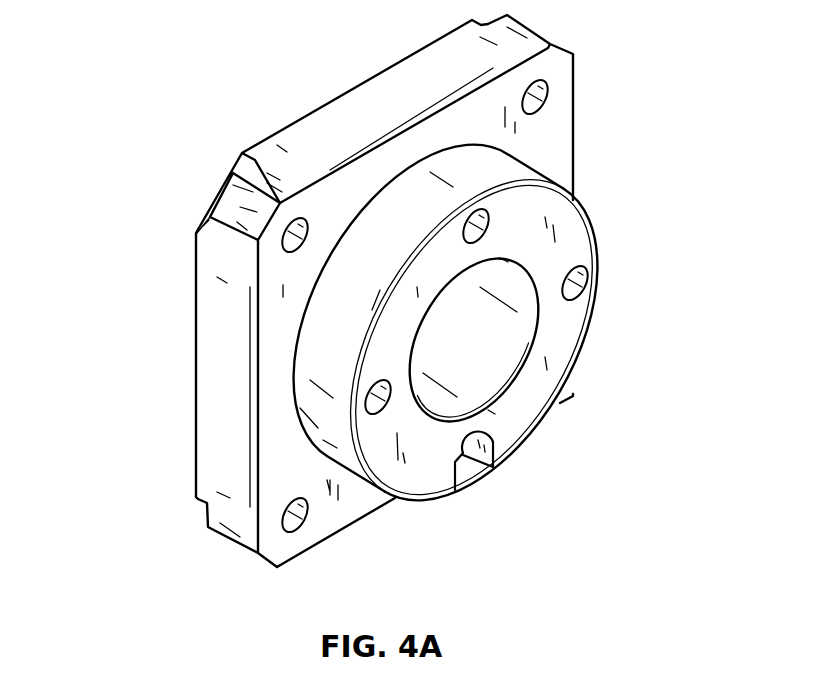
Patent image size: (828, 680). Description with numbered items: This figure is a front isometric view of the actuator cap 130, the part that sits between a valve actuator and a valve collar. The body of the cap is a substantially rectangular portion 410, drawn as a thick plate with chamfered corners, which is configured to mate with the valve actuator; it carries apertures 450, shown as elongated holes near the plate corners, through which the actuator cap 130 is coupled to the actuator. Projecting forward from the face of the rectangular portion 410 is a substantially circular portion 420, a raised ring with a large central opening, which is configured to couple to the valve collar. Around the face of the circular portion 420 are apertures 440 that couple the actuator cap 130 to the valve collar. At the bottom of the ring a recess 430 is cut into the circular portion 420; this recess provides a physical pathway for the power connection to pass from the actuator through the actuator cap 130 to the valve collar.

The actuator cap 130 is at (150, 92).
The rectangular portion 410 is at (551, 45).
The circular portion 420 is at (604, 214).
The recess 430 is at (474, 470).
The apertures 440 is at (488, 223).
The apertures 450 is at (307, 224).